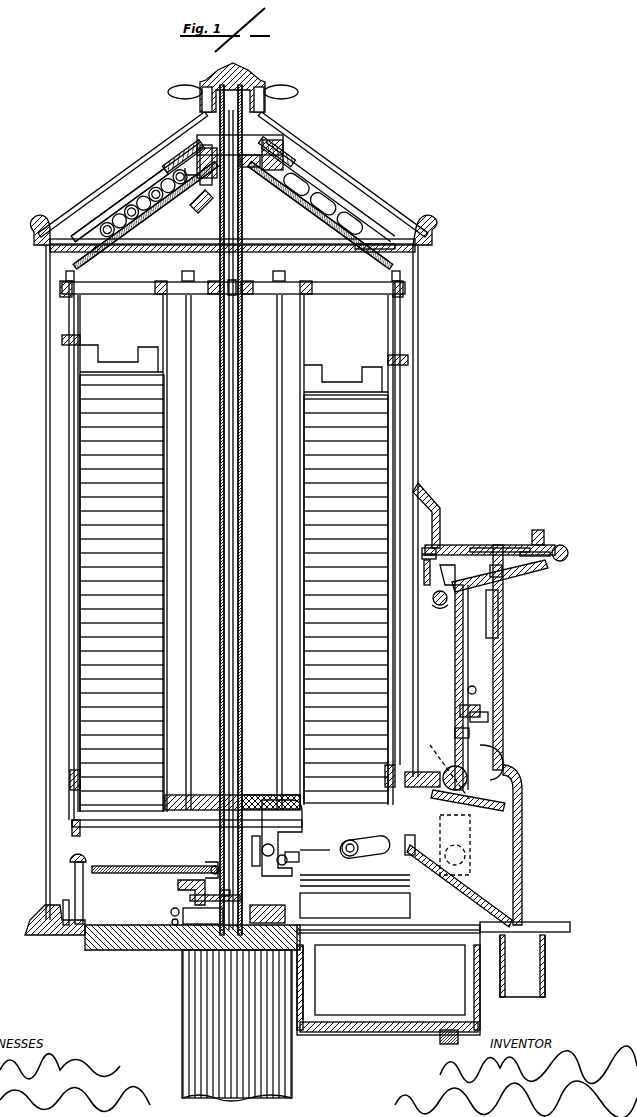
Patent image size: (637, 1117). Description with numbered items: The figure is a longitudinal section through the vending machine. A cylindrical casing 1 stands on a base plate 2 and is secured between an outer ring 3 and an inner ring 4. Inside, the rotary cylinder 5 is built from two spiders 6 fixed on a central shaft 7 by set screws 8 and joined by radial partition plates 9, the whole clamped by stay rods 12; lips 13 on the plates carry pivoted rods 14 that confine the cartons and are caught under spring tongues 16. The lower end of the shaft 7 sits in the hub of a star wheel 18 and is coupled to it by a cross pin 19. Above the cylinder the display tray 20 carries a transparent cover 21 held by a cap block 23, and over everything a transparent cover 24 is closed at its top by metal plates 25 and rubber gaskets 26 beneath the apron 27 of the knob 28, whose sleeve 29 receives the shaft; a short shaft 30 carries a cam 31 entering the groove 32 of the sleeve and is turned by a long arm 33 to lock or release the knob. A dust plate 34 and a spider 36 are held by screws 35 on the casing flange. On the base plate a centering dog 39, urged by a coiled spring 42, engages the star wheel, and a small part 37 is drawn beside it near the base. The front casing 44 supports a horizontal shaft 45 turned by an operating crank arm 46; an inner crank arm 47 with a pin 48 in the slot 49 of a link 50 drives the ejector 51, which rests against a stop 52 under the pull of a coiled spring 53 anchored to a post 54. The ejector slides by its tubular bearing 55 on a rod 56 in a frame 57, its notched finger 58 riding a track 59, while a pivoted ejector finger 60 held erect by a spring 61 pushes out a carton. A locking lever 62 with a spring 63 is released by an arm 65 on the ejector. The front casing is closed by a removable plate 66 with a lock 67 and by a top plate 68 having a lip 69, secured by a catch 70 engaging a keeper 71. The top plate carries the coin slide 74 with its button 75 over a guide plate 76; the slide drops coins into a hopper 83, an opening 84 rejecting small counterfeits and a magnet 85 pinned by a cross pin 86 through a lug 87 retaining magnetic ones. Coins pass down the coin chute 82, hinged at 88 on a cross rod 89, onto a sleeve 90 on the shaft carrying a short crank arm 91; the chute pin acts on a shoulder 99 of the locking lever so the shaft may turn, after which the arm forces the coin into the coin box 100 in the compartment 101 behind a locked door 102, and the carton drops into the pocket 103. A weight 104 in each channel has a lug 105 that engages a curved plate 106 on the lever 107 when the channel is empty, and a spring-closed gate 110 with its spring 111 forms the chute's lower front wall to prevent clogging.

The cylindrical casing 1 is at (46, 544).
The base plate 2 is at (327, 930).
The outer ring 3 is at (42, 910).
The inner ring 4 is at (55, 935).
The rotary cylinder 5 is at (148, 828).
The spiders 6 is at (260, 294).
The central shaft 7 is at (243, 218).
The set screws 8 is at (226, 292).
The partition plates 9 is at (163, 313).
The stay rods 12 is at (192, 356).
The lips 13 is at (72, 784).
The rods 14 is at (74, 309).
The spring tongues 16 is at (62, 287).
The star wheel 18 is at (190, 898).
The cross pin 19 is at (218, 889).
The display tray 20 is at (295, 192).
The transparent cover 21 is at (150, 197).
The cap block or collar 23 is at (284, 156).
The transparent cover 24 is at (142, 166).
The metal plates 25 is at (286, 128).
The rubber gaskets 26 is at (264, 126).
The depending lip or apron 27 is at (202, 100).
The knob or hand hold 28 is at (232, 81).
The sleeve 29 is at (183, 127).
The short vertical shaft 30 is at (201, 170).
The cam 31 is at (165, 150).
The annular groove 32 is at (290, 140).
The long arm 33 is at (197, 211).
The dust plate 34 is at (330, 252).
The screws 35 is at (362, 250).
The spider 36 is at (276, 245).
The pin 37 is at (171, 912).
The centering dog 39 is at (203, 919).
The coiled spring 42 is at (172, 922).
The front casing 44 is at (522, 789).
The horizontal shaft 45 is at (467, 779).
The operating crank arm 46 is at (470, 839).
The crank arm 47 is at (412, 852).
The screw or pin 48 is at (345, 845).
The slot 49 is at (349, 840).
The link 50 is at (316, 844).
The ejector 51 is at (269, 845).
The stop 52 is at (254, 848).
The coiled spring 53 is at (154, 862).
The post 54 is at (83, 891).
The tubular bearing 55 is at (301, 853).
The rod 56 is at (355, 884).
The bracket or frame 57 is at (267, 917).
The notched finger 58 is at (355, 886).
The flange or track 59 is at (355, 905).
The ejector finger 60 is at (270, 822).
The coiled spring 61 is at (290, 855).
The locking lever 62 is at (205, 866).
The coiled spring 63 is at (178, 890).
The arm 65 is at (214, 862).
The removable plate 66 is at (507, 657).
The lock 67 is at (498, 599).
The top plate 68 is at (478, 545).
The lip 69 is at (426, 515).
The pivoted catch 70 is at (496, 571).
The keeper 71 is at (552, 570).
The coin slide 74 is at (528, 545).
The button or finger hold 75 is at (543, 531).
The guide plate 76 is at (500, 538).
The coin chute 82 is at (455, 634).
The coin receiving hopper 83 is at (446, 575).
The opening 84 is at (500, 574).
The bent magnet 85 is at (424, 578).
The cross pin 86 is at (422, 550).
The lug 87 is at (422, 557).
The hinge connection 88 is at (436, 614).
The cross rod 89 is at (433, 600).
The sleeve 90 is at (470, 790).
The short crank arm 91 is at (503, 753).
The cam enlargement or shoulder 99 is at (470, 734).
The coin box 100 is at (388, 982).
The compartment 101 is at (311, 982).
The locked door 102 is at (376, 1033).
The depressed pocket 103 is at (522, 966).
The weight 104 is at (345, 380).
The lug 105 is at (62, 340).
The curved plate 106 is at (416, 787).
The lever 107 is at (490, 718).
The gate 110 is at (478, 709).
The spring 111 is at (483, 685).